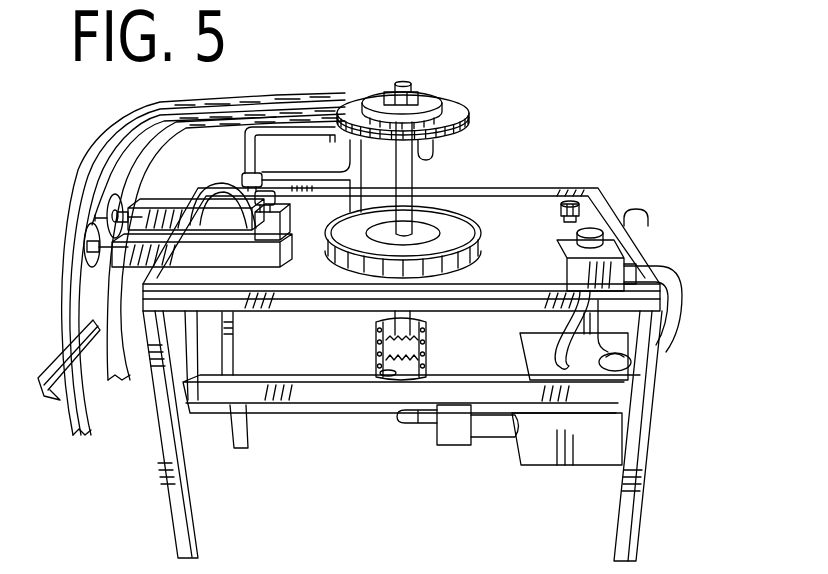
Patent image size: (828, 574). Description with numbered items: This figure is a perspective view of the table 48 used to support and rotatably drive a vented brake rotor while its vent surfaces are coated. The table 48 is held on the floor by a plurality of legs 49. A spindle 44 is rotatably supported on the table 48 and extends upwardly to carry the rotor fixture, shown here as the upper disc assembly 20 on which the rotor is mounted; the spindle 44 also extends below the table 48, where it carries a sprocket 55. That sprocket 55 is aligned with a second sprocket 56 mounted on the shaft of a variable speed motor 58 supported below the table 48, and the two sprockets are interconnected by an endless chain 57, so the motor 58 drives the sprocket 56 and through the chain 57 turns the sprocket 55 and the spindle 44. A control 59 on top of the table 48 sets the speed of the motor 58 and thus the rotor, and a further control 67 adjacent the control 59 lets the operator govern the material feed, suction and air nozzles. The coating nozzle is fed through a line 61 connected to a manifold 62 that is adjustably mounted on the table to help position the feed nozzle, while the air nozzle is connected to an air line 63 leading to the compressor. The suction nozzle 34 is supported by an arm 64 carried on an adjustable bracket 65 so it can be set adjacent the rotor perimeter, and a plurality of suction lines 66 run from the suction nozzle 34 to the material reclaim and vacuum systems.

The dispensing wheel assembly 20 is at (466, 95).
The suction nozzle 34 is at (340, 96).
The spindle 44 is at (404, 182).
The table 48 is at (531, 175).
The legs 49 is at (185, 513).
The sprocket 55 is at (377, 334).
The sprocket 56 is at (412, 377).
The chain 57 is at (424, 344).
The variable speed motor 58 is at (454, 438).
The control 59 is at (605, 253).
The line 61 is at (317, 182).
The manifold 62 is at (254, 253).
The air line 63 is at (426, 158).
The arm 64 is at (247, 143).
The adjustable bracket 65 is at (195, 206).
The suction lines 66 is at (198, 110).
The control 67 is at (603, 190).